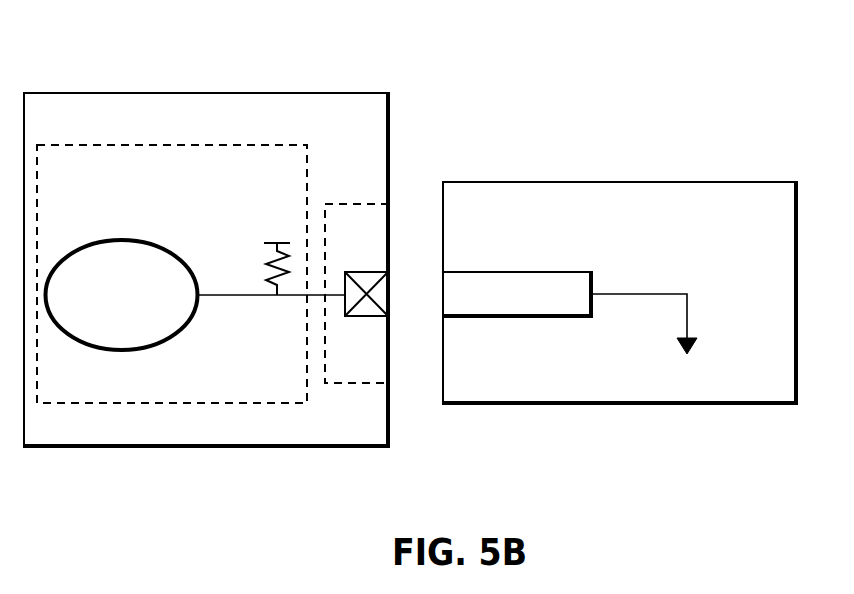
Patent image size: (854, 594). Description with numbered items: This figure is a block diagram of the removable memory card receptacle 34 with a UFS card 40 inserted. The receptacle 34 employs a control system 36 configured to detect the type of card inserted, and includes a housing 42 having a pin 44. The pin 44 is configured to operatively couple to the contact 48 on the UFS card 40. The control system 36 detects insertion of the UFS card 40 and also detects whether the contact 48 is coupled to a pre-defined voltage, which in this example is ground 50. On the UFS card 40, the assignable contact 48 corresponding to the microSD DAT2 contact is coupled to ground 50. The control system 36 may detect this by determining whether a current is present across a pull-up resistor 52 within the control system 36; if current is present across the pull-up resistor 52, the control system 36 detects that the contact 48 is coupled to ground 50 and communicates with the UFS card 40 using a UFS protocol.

The removable memory card receptacle 34 is at (177, 93).
The control system 36 is at (76, 145).
The UFS card 40 is at (772, 181).
The housing 42 is at (364, 203).
The pin 44 is at (368, 318).
The contact 48 is at (521, 270).
The ground 50 is at (697, 350).
The pull-up resistor 52 is at (268, 258).